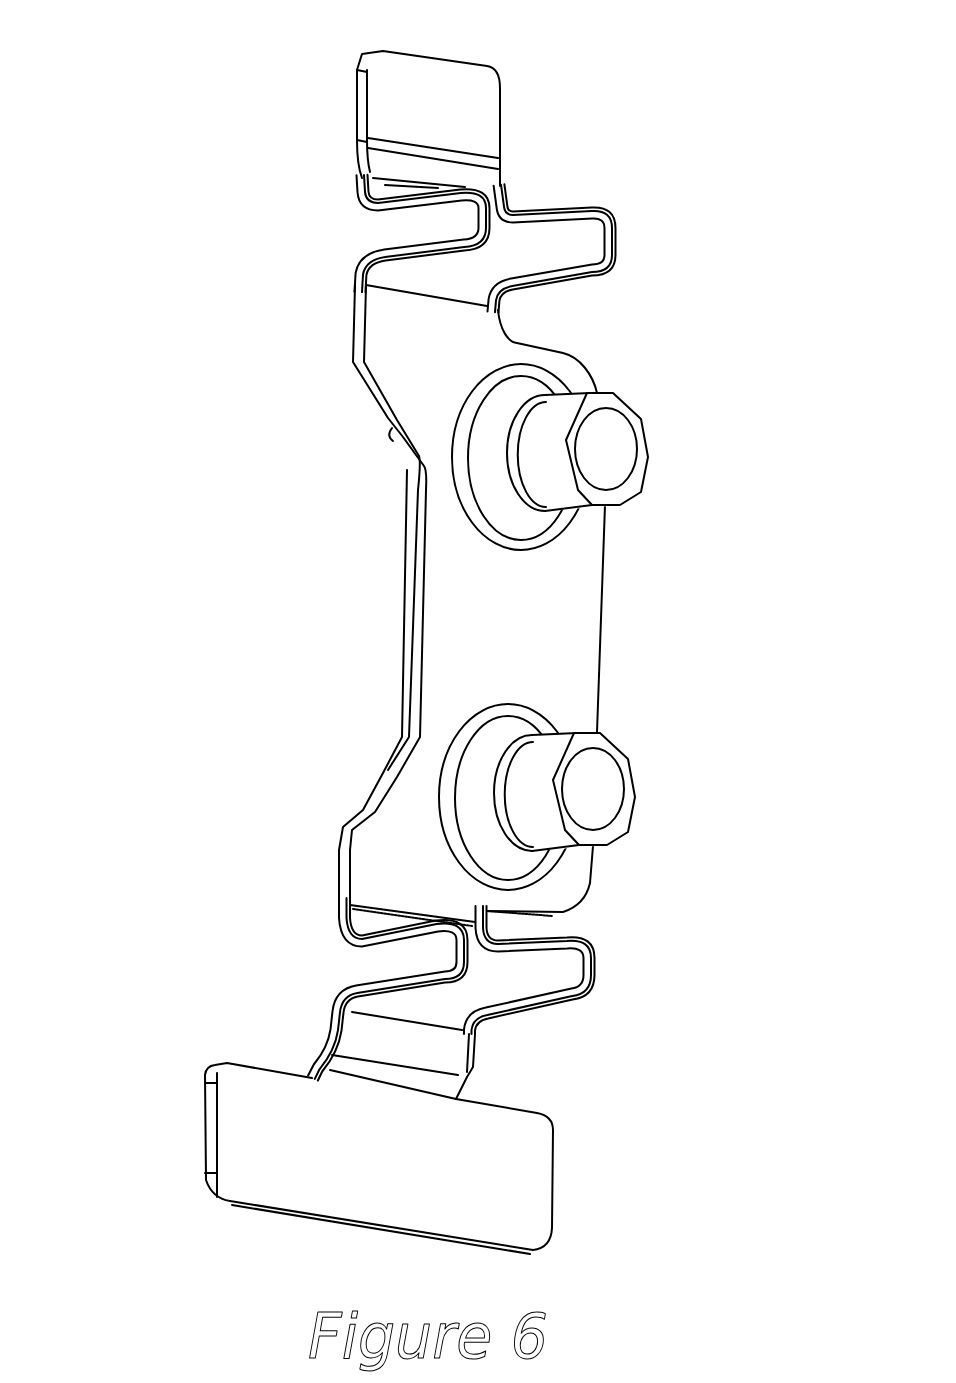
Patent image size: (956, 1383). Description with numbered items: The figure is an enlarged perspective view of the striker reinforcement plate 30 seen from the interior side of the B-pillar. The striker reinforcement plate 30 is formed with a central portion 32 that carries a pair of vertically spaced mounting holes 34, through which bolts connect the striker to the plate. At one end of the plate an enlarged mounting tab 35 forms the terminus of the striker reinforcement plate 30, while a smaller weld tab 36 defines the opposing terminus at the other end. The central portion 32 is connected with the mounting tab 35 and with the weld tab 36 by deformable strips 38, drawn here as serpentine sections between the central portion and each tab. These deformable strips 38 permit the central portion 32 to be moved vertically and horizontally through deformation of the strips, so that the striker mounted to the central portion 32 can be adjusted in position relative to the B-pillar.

The striker reinforcement plate 30 is at (642, 124).
The central portion 32 is at (440, 602).
The mounting holes 34 is at (630, 467).
The mounting tab 35 is at (240, 1125).
The weld tab 36 is at (380, 108).
The deformable strips 38 is at (397, 250).